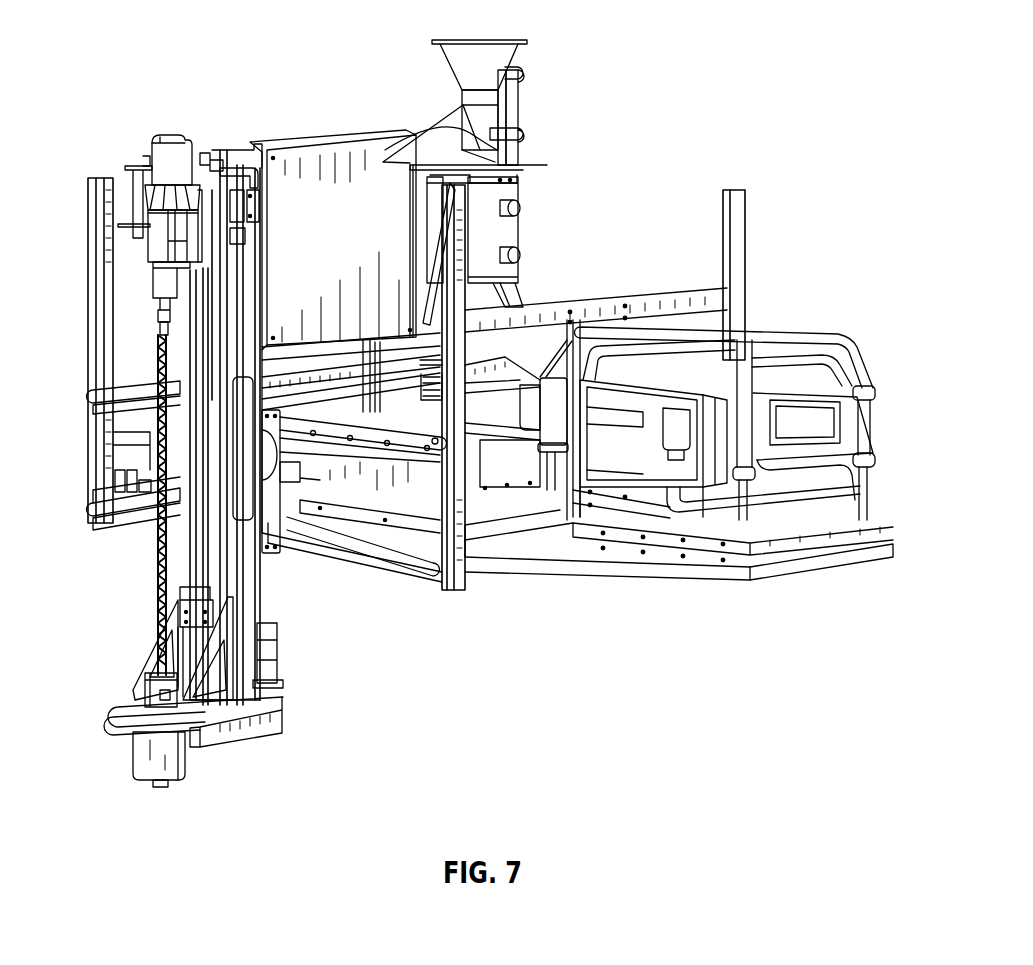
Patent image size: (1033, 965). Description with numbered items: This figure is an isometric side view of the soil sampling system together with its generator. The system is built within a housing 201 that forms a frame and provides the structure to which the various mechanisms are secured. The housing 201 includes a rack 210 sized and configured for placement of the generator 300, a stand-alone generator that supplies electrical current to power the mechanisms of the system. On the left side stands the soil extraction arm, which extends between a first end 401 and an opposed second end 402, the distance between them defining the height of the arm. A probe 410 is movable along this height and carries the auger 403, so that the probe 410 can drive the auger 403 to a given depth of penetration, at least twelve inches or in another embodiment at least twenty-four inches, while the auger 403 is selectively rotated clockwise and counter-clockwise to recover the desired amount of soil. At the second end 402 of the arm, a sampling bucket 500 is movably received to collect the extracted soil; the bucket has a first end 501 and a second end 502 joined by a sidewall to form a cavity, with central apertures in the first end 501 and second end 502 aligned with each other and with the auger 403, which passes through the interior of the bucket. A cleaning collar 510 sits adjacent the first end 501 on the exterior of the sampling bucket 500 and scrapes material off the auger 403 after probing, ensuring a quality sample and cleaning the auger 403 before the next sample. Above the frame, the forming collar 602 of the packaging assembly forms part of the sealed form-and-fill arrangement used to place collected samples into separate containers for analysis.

The housing 201 is at (748, 214).
The rack 210 is at (838, 557).
The generator 300 is at (855, 420).
The first end 401 is at (137, 164).
The second end 402 is at (255, 738).
The auger 403 is at (160, 584).
The probe 410 is at (145, 257).
The sampling bucket 500 is at (131, 764).
The first end 501 is at (137, 750).
The second end 502 is at (141, 782).
The cleaning collar 510 is at (147, 702).
The forming collar 602 is at (462, 90).